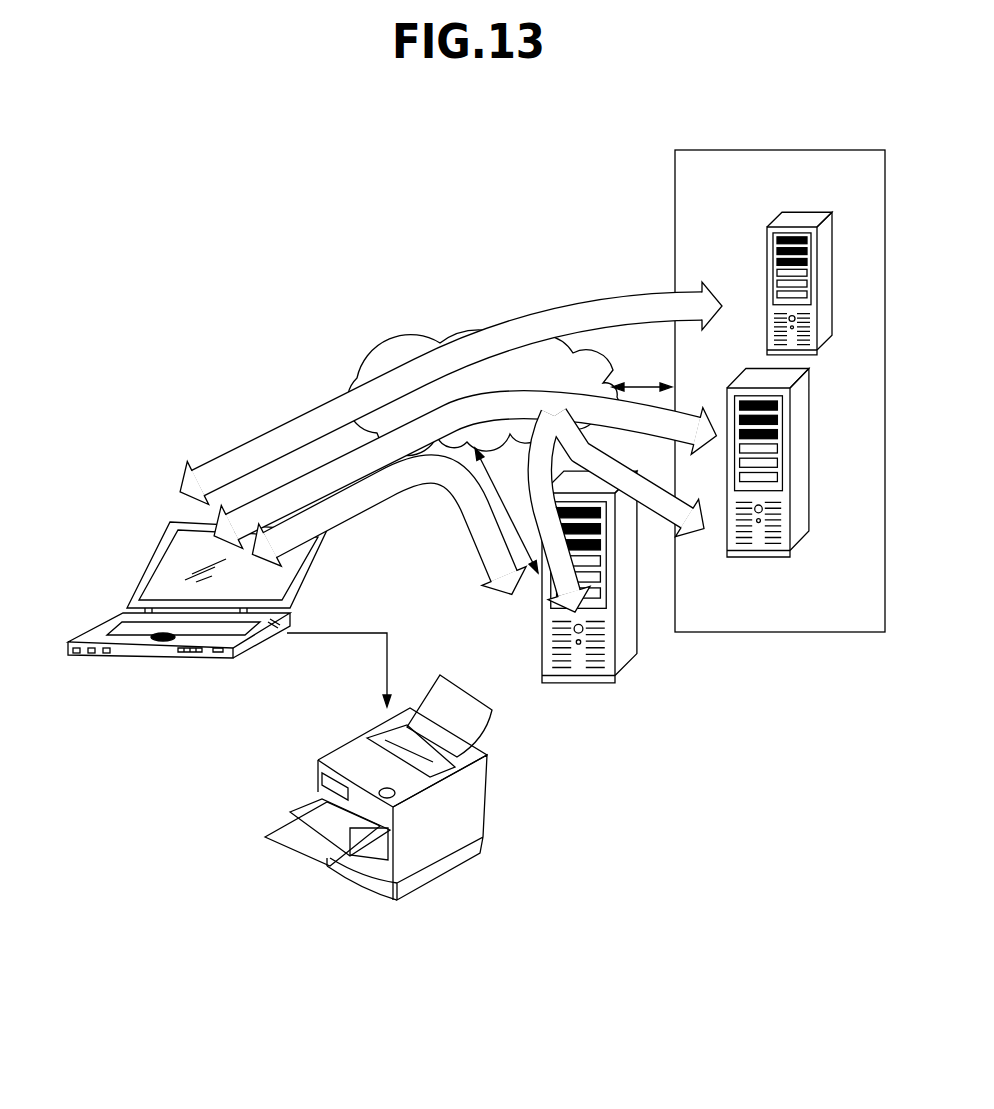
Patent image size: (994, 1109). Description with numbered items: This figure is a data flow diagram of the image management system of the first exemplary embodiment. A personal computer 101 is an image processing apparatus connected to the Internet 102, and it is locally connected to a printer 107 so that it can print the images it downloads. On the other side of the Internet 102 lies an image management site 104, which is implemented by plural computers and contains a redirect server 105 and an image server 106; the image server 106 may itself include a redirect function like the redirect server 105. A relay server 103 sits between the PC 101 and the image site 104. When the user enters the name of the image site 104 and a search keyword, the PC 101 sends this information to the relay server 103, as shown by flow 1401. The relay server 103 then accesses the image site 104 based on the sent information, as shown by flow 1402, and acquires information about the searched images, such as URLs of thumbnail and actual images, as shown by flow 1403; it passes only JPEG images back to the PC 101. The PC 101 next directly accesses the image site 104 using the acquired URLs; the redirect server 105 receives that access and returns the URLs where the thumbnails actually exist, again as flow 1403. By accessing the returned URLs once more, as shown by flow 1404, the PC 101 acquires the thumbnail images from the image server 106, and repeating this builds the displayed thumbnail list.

The personal computer 101 is at (170, 565).
The Internet 102 is at (418, 335).
The relay server 103 is at (542, 647).
The image management site 104 is at (787, 634).
The redirect server 105 is at (812, 425).
The image server 106 is at (767, 283).
The printer 107 is at (487, 807).
The flow 1401 is at (360, 505).
The flow 1402 is at (547, 510).
The flow 1403 is at (325, 478).
The flow 1404 is at (238, 460).